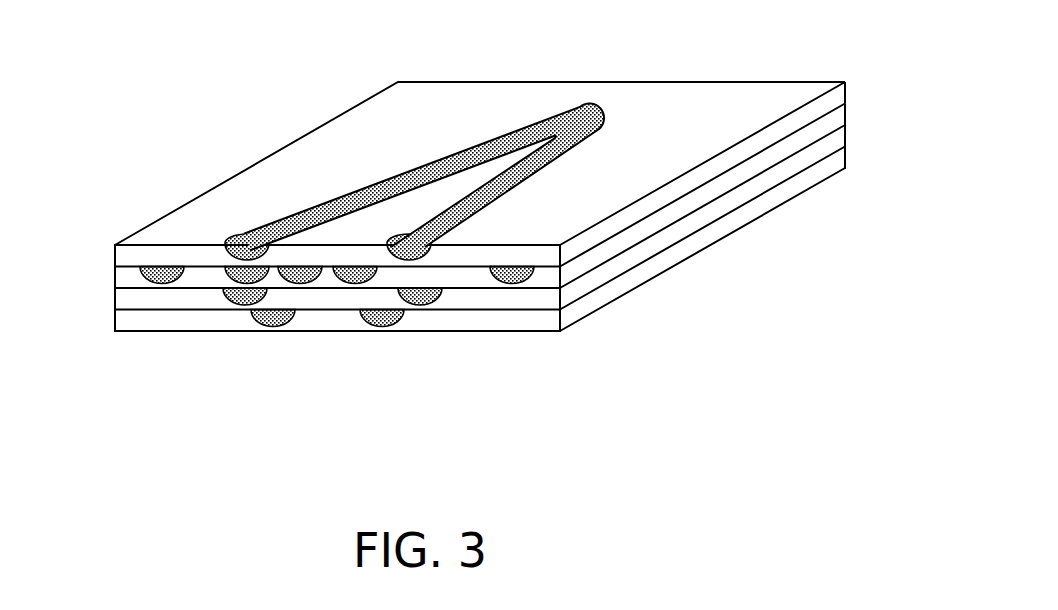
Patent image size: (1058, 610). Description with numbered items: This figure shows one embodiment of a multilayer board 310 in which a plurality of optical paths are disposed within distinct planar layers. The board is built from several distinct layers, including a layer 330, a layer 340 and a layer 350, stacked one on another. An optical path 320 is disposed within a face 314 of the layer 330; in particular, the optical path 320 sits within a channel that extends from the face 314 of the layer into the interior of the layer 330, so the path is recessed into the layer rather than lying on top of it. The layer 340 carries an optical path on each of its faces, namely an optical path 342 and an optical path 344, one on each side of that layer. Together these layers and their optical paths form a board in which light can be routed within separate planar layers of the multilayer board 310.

The multilayer board 310 is at (256, 76).
The face 314 is at (655, 78).
The optical path 320 is at (431, 158).
The layer 330 is at (837, 96).
The layer 340 is at (592, 257).
The optical path 342 is at (157, 282).
The optical path 344 is at (222, 268).
The layer 350 is at (837, 163).